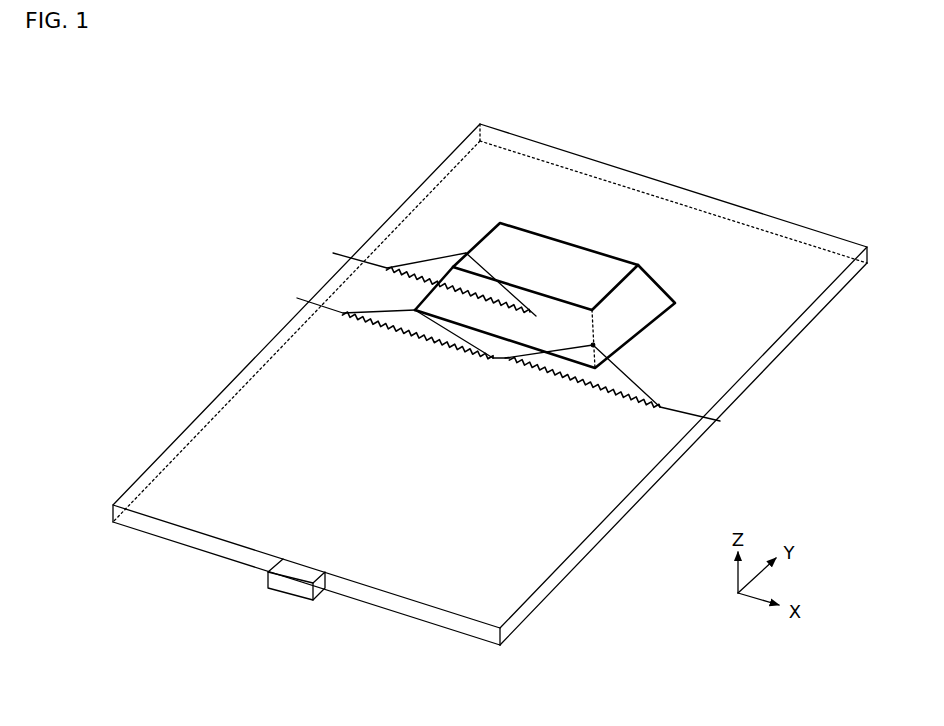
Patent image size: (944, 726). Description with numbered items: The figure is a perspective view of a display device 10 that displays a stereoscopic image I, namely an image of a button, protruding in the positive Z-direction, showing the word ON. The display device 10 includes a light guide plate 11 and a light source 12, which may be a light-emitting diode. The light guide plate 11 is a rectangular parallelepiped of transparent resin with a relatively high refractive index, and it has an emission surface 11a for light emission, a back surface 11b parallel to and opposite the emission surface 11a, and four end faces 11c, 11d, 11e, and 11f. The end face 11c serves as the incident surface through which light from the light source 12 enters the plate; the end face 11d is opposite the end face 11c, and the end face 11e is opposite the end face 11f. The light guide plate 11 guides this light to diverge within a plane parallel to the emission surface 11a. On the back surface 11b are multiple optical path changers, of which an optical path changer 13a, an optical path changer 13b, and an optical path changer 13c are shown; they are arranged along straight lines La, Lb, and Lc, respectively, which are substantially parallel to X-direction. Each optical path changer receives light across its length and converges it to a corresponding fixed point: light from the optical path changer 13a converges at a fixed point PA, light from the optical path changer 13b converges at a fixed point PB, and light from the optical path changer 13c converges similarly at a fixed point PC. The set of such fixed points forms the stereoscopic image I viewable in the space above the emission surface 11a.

The display device 10 is at (689, 181).
The light guide plate 11 is at (815, 231).
The emission surface 11a is at (809, 307).
The back surface 11b is at (750, 391).
The end face (incident surface) 11c is at (218, 551).
The end face 11d is at (560, 150).
The end face 11e is at (142, 477).
The end face 11f is at (585, 555).
The light source 12 is at (305, 598).
The optical path changer 13a is at (412, 282).
The optical path changer 13b is at (447, 357).
The optical path changer 13c is at (573, 383).
The stereoscopic image I is at (593, 247).
The fixed point PA is at (465, 252).
The fixed point PB is at (426, 303).
The fixed point PC is at (594, 346).
The line La is at (346, 254).
The line Lb is at (391, 323).
The line Lc is at (704, 425).